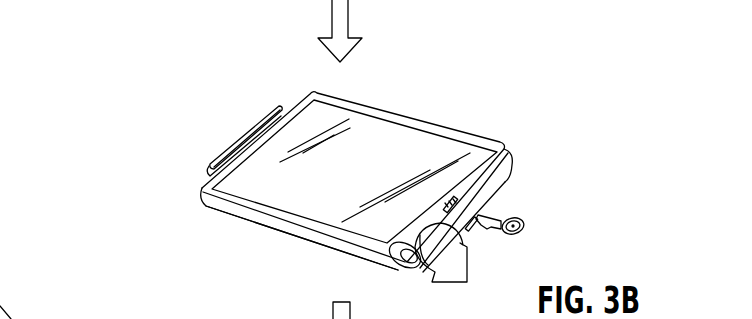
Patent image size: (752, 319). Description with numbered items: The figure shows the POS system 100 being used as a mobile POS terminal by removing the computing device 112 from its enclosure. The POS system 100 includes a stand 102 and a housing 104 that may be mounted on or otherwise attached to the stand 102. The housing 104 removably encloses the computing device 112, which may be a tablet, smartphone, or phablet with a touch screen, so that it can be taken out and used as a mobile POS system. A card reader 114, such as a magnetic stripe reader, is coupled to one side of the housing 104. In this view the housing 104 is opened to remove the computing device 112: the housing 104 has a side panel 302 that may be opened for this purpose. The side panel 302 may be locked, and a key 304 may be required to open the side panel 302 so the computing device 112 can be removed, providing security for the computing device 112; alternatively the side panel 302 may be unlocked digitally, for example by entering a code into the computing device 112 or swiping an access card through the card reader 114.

The POS system 100 is at (123, 78).
The stand 102 is at (410, 143).
The housing 104 is at (262, 217).
The computing device 112 is at (295, 107).
The card reader 114 is at (240, 134).
The side panel 302 is at (503, 181).
The key 304 is at (521, 214).